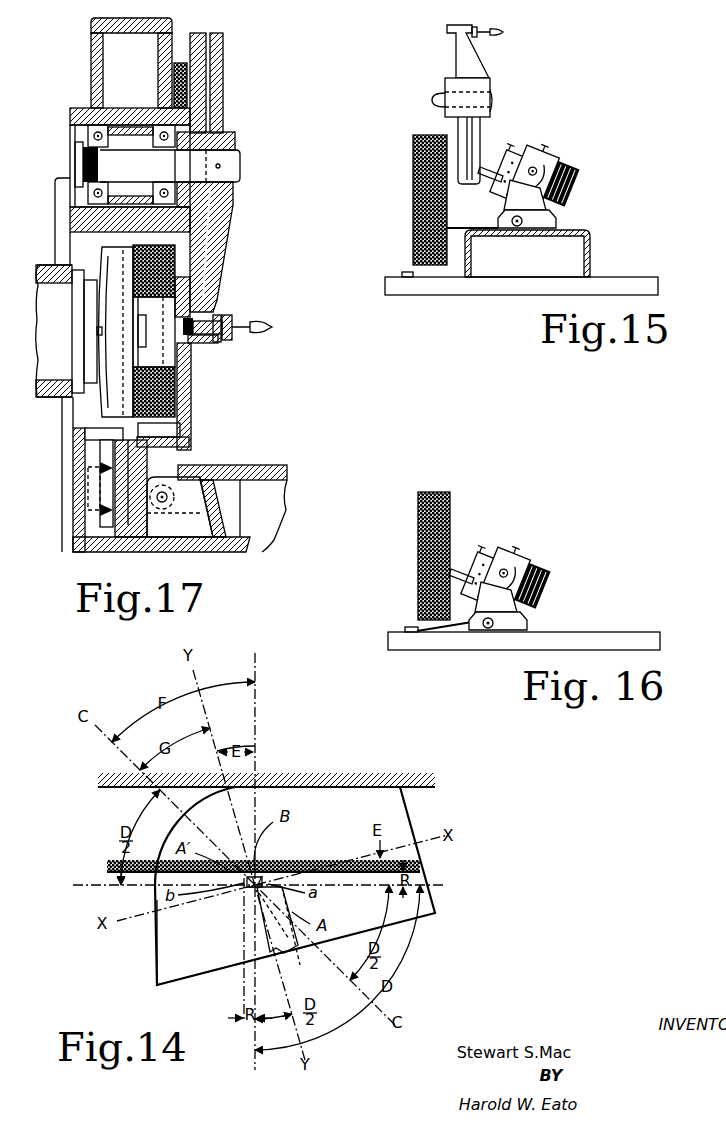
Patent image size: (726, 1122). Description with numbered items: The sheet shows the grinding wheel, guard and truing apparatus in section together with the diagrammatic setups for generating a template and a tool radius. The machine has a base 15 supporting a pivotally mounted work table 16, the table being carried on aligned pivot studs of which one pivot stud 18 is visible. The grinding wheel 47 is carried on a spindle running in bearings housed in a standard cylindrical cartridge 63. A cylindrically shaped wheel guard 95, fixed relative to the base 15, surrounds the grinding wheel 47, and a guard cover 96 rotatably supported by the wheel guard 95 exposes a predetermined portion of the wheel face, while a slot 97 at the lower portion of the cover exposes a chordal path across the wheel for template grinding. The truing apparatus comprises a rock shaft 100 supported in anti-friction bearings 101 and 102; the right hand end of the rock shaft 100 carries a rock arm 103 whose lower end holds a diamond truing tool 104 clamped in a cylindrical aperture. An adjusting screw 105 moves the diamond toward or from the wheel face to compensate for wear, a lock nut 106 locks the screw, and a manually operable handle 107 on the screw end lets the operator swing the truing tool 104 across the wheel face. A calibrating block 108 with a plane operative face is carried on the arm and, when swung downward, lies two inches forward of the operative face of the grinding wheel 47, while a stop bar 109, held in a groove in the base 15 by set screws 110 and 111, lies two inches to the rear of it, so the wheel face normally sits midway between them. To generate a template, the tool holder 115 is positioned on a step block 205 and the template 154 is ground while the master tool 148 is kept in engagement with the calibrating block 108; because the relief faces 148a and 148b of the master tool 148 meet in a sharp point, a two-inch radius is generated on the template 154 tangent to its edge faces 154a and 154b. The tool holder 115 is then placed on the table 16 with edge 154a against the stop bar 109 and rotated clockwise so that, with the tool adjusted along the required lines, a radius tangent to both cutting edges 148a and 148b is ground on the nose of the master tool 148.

In FIG. 17, the base 15 is at (134, 540).
In FIG. 17, the work table 16 is at (279, 465).
In FIG. 15, the work table 16 is at (634, 277).
In FIG. 16, the work table 16 is at (623, 632).
In FIG. 17, the pivot stud 18 is at (163, 502).
In FIG. 17, the grinding wheel 47 is at (176, 380).
In FIG. 15, the grinding wheel 47 is at (423, 136).
In FIG. 16, the grinding wheel 47 is at (450, 511).
In FIG. 14, the grinding wheel 47 is at (106, 873).
In FIG. 17, the cylindrical cartridge 63 is at (52, 283).
In FIG. 17, the wheel guard 95 is at (69, 228).
In FIG. 17, the guard cover 96 is at (192, 430).
In FIG. 17, the slot 97 is at (176, 352).
In FIG. 17, the rock shaft 100 is at (98, 160).
In FIG. 15, the rock shaft 100 is at (436, 92).
In FIG. 17, the anti-friction bearing 101 is at (98, 108).
In FIG. 17, the anti-friction bearing 102 is at (155, 114).
In FIG. 17, the rock arm 103 is at (230, 198).
In FIG. 15, the rock arm 103 is at (482, 79).
In FIG. 17, the diamond truing tool 104 is at (195, 337).
In FIG. 15, the diamond truing tool 104 is at (447, 30).
In FIG. 17, the adjusting screw 105 is at (228, 316).
In FIG. 17, the lock nut 106 is at (215, 316).
In FIG. 17, the manually operable handle 107 is at (273, 326).
In FIG. 15, the manually operable handle 107 is at (503, 32).
In FIG. 17, the calibrating block 108 is at (224, 83).
In FIG. 15, the calibrating block 108 is at (481, 135).
In FIG. 17, the stop bar 109 is at (100, 455).
In FIG. 15, the stop bar 109 is at (405, 272).
In FIG. 16, the stop bar 109 is at (411, 627).
In FIG. 14, the stop bar 109 is at (436, 789).
In FIG. 17, the set screw 110 is at (100, 473).
In FIG. 17, the set screw 111 is at (100, 510).
In FIG. 15, the tool holder 115 is at (551, 216).
In FIG. 16, the tool holder 115 is at (512, 616).
In FIG. 15, the master tool 148 is at (492, 177).
In FIG. 16, the master tool 148 is at (455, 568).
In FIG. 14, the master tool 148 is at (283, 893).
In FIG. 14, the front cutting edge 148a is at (263, 875).
In FIG. 14, the side cutting edge 148b is at (246, 893).
In FIG. 15, the master template 154 is at (474, 227).
In FIG. 16, the master template 154 is at (448, 632).
In FIG. 14, the master template 154 is at (405, 813).
In FIG. 14, the edge face 154a is at (318, 787).
In FIG. 14, the edge face 154b is at (157, 952).
In FIG. 15, the step block 205 is at (590, 242).